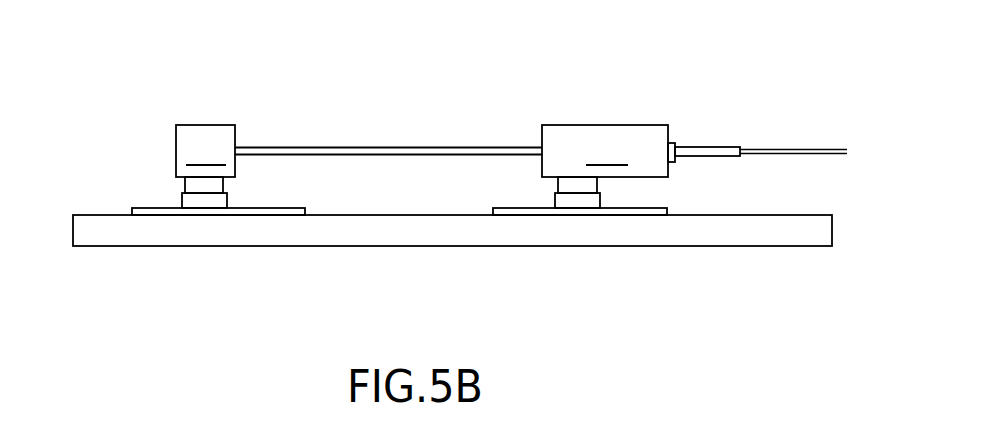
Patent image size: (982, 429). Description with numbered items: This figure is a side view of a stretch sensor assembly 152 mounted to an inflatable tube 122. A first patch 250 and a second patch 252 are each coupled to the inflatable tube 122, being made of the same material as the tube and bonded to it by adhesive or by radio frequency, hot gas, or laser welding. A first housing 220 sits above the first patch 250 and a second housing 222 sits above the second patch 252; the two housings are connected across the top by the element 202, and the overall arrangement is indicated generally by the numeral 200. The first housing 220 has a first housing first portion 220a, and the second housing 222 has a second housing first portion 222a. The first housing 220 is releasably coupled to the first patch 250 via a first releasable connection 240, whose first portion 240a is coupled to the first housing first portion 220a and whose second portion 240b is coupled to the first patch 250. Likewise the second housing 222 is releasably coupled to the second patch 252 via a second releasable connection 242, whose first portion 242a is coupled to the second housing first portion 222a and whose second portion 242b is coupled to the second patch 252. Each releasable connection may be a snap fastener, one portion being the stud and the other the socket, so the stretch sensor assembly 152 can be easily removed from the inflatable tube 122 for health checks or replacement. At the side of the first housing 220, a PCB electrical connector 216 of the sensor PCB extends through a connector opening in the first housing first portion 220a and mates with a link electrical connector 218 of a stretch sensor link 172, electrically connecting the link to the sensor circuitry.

The inflatable tube 122 is at (412, 235).
The stretch sensor assembly 152 is at (638, 85).
The stretch sensor link 172 is at (788, 150).
The optical interconnect 200 is at (467, 110).
The waveguide 202 is at (345, 150).
The PCB electrical connector 216 is at (672, 142).
The link electrical connector 218 is at (712, 150).
The first housing 220 is at (605, 113).
The first housing first portion 220a is at (580, 125).
The second housing 222 is at (203, 115).
The second housing first portion 222a is at (202, 125).
The first releasable connection 240 is at (672, 188).
The first portion of first releasable connection 240a is at (590, 186).
The second portion of first releasable connection 240b is at (590, 204).
The second releasable connection 242 is at (120, 176).
The first portion of second releasable connection 242a is at (188, 186).
The second portion of second releasable connection 242b is at (188, 201).
The first patch 250 is at (531, 213).
The second patch 252 is at (250, 213).